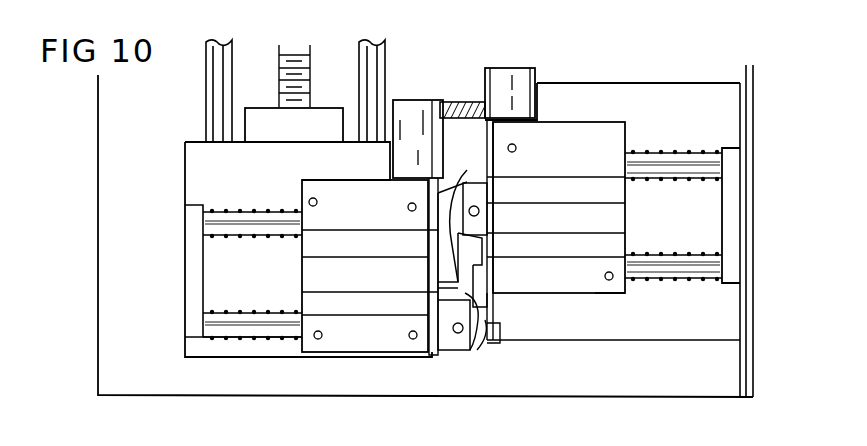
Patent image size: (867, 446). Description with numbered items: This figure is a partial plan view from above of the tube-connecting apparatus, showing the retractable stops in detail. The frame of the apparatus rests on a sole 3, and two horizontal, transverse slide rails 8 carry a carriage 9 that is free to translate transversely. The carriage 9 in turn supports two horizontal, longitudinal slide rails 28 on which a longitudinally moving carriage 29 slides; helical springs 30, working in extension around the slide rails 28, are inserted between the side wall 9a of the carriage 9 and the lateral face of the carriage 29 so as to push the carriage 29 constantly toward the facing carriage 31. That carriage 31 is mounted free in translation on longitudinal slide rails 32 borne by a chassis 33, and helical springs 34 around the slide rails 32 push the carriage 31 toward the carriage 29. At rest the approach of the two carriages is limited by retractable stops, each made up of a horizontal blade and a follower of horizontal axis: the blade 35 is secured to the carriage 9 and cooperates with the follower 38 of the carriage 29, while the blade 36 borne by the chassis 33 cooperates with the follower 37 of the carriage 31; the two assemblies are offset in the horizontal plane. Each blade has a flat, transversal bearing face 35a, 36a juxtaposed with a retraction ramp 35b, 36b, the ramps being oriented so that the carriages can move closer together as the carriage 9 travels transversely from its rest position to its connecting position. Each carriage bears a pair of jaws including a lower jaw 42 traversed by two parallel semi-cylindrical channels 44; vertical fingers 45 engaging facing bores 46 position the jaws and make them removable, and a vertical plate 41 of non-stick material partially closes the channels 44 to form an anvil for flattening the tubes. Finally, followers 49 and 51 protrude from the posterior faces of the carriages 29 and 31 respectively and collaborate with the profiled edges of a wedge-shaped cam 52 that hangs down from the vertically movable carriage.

The sole 3 is at (674, 383).
The slide rails 8 is at (206, 100).
The carriage 9 is at (265, 350).
The side wall of the carriage 9a is at (191, 270).
The slide rails 28 is at (240, 212).
The carriage 29 is at (323, 353).
The helical springs 30 is at (239, 348).
The carriage 31 is at (600, 296).
The slide rails 32 is at (673, 255).
The chassis 33 is at (767, 243).
The helical springs 34 is at (678, 283).
The blade 35 is at (443, 250).
The bearing face 35a is at (464, 262).
The retraction ramp 35b is at (452, 226).
The blade 36 is at (501, 340).
The bearing face 36a is at (447, 287).
The retraction ramp 36b is at (470, 312).
The follower 37 is at (449, 203).
The follower 38 is at (477, 342).
The vertical plate 41 is at (432, 335).
The lower jaw 42 is at (314, 186).
The channels 44 is at (341, 247).
The vertical fingers 45 is at (322, 335).
The bores 46 is at (322, 194).
The follower 49 is at (419, 112).
The follower 51 is at (536, 74).
The wedge-shaped cam 52 is at (455, 100).